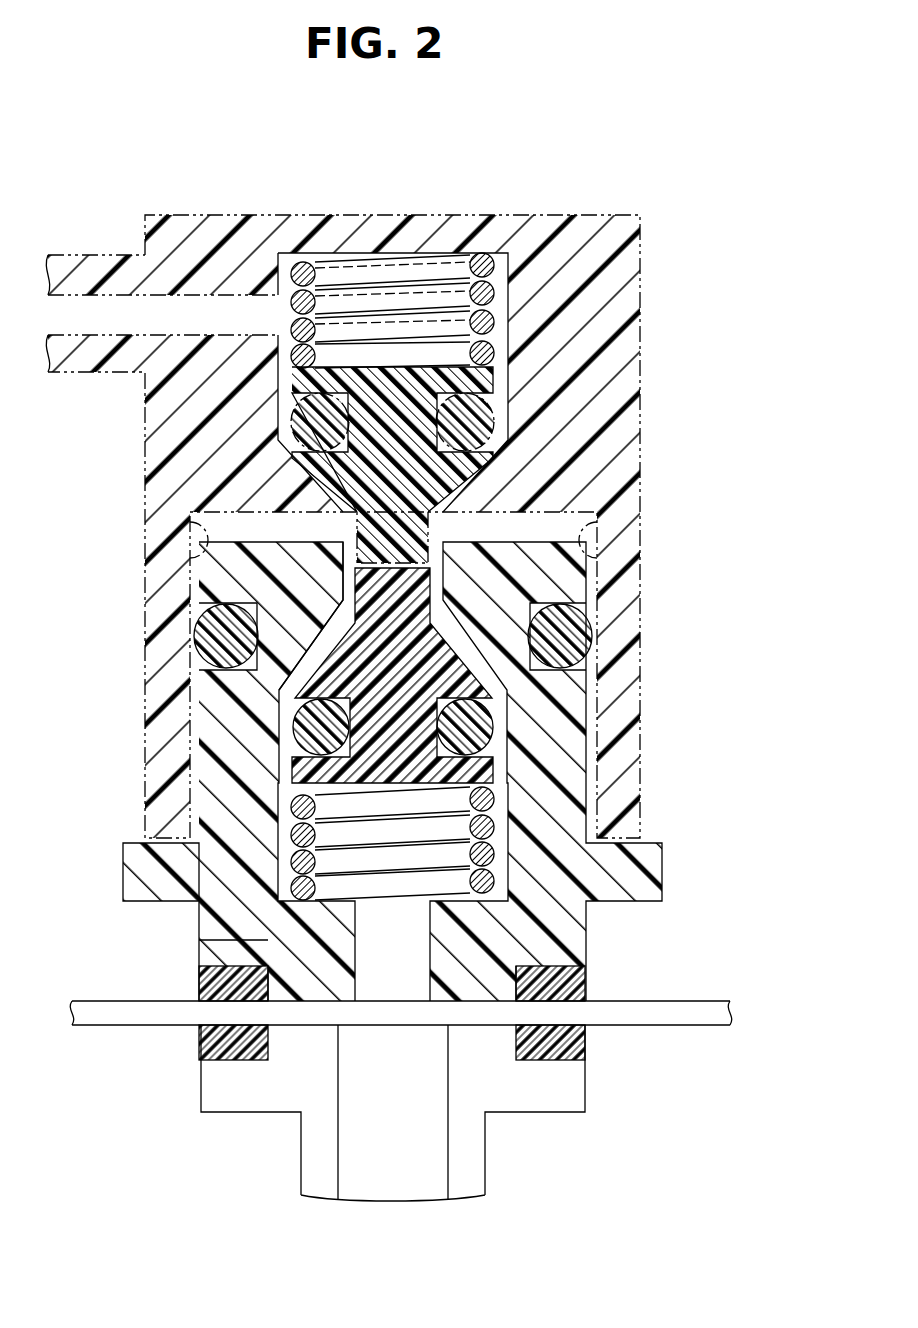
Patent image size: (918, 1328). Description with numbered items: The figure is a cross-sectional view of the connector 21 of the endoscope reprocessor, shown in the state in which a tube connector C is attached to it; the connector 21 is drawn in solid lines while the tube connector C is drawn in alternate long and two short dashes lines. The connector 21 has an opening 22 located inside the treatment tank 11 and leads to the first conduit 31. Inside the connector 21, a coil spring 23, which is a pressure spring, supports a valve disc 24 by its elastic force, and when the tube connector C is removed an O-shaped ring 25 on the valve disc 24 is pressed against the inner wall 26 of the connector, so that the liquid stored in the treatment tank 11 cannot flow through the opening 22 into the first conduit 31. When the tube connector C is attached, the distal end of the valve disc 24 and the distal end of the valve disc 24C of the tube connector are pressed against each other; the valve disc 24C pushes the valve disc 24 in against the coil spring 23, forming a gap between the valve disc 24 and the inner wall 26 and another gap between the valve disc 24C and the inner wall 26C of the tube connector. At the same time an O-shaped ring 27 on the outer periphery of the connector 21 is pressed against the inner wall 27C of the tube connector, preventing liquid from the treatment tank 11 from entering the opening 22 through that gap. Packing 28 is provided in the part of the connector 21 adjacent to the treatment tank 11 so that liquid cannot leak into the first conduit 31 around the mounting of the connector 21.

The treatment tank 11 is at (688, 1017).
The connector 21 is at (123, 868).
The opening 22 is at (330, 484).
The coil spring 23 is at (470, 818).
The valve disc 24 is at (458, 680).
The O-shaped ring 25 is at (318, 730).
The inner wall of the connector 26 is at (445, 612).
The O-shaped ring 27 is at (226, 636).
The packing 28 is at (215, 1045).
The first conduit 31 is at (448, 1148).
The tube connector C is at (145, 432).
The valve disc of the tube connector 24C is at (470, 482).
The inner wall of the tube connector 26C is at (492, 446).
The inner wall of the tube connector 27C is at (188, 530).